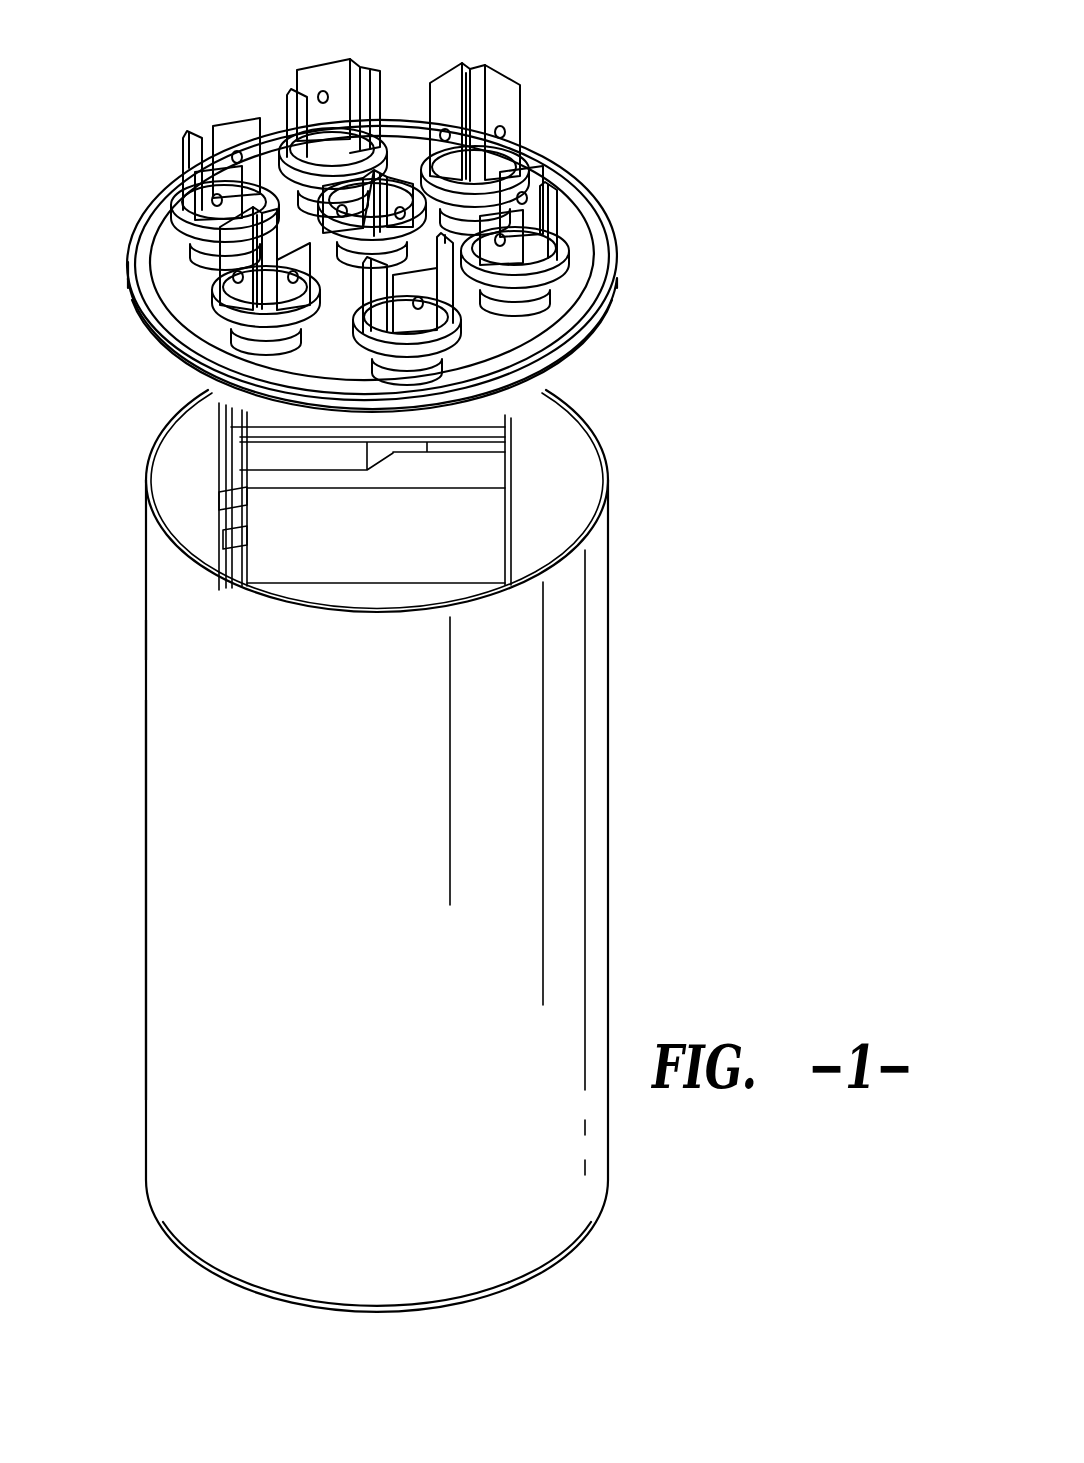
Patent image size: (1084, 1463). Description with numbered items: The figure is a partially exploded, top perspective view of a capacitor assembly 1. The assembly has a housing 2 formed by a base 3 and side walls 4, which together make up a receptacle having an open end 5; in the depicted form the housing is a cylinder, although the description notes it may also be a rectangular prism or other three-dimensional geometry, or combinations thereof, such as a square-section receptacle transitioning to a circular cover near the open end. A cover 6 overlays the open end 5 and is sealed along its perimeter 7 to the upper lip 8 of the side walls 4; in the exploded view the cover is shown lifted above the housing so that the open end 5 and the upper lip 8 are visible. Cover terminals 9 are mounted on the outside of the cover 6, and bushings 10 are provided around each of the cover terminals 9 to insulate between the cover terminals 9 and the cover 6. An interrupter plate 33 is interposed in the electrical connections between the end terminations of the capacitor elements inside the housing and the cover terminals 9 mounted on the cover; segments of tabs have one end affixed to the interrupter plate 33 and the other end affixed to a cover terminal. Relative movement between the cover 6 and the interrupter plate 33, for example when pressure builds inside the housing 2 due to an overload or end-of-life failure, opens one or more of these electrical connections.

The capacitor assembly 1 is at (683, 256).
The housing 2 is at (632, 852).
The base 3 is at (533, 1285).
The side walls 4 is at (146, 932).
The open end 5 is at (183, 460).
The cover 6 is at (140, 268).
The perimeter 7 is at (603, 217).
The upper lip 8 is at (146, 475).
The cover terminals 9 is at (306, 68).
The bushings 10 is at (238, 352).
The interrupter plate 33 is at (562, 368).